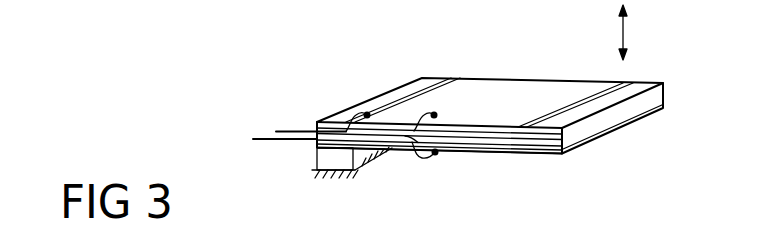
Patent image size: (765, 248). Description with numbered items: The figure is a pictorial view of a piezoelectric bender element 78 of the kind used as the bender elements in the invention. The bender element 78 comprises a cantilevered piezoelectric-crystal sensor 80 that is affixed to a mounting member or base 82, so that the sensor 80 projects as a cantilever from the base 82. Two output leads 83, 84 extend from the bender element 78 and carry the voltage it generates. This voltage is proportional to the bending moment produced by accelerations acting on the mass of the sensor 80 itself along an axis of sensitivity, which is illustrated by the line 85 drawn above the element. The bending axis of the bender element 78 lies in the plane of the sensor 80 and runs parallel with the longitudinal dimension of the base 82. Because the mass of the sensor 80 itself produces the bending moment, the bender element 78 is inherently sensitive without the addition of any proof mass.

The piezoelectric bender element 78 is at (528, 81).
The piezoelectric-crystal sensor 80 is at (517, 154).
The base 82 is at (315, 158).
The output lead 83 is at (287, 130).
The output lead 84 is at (265, 140).
The axis of sensitivity 85 is at (625, 28).